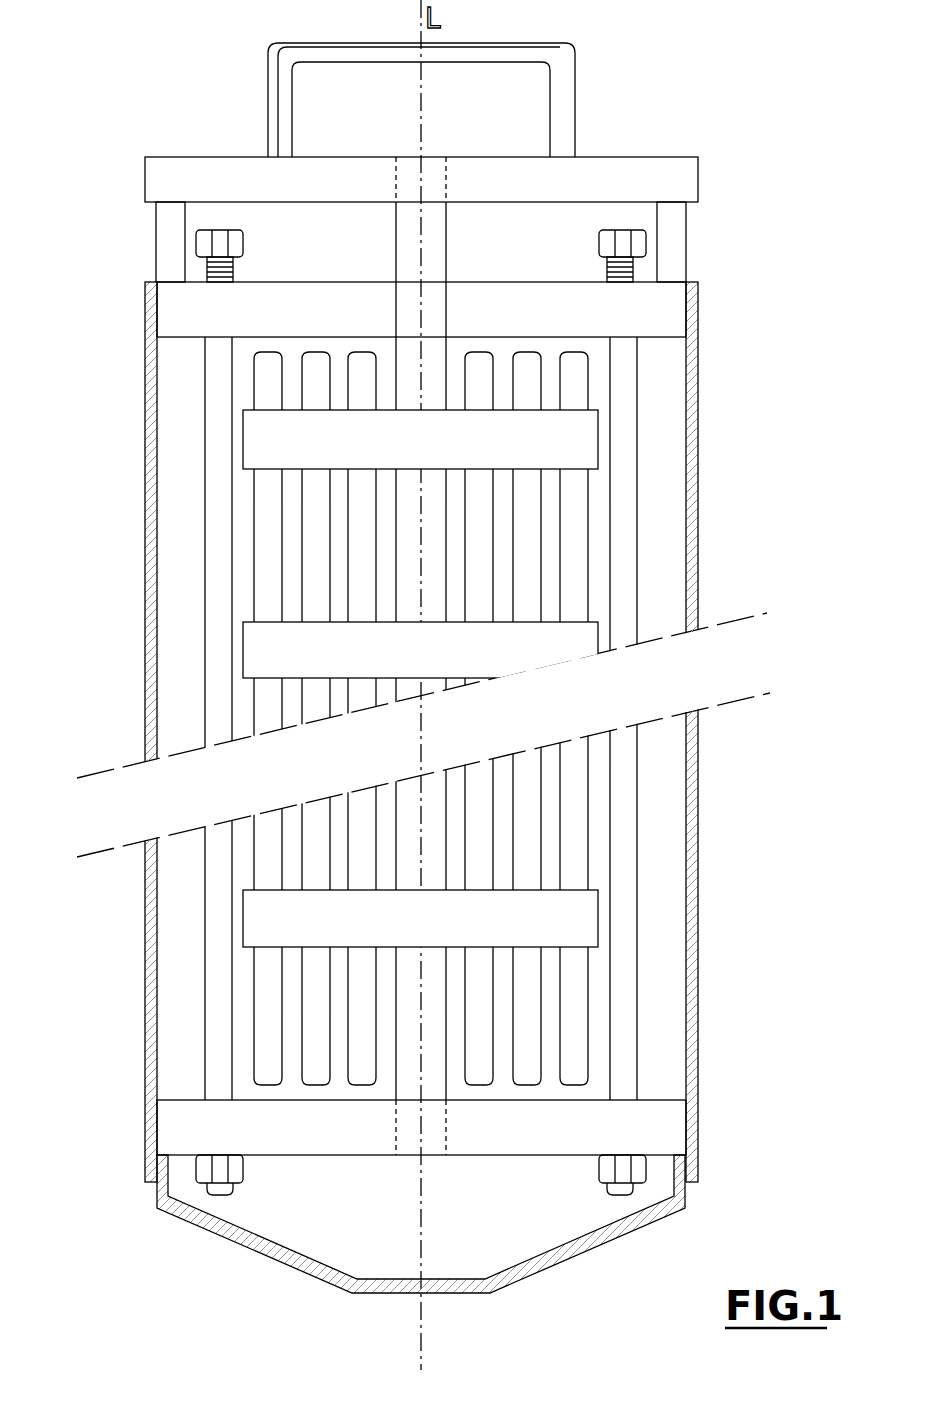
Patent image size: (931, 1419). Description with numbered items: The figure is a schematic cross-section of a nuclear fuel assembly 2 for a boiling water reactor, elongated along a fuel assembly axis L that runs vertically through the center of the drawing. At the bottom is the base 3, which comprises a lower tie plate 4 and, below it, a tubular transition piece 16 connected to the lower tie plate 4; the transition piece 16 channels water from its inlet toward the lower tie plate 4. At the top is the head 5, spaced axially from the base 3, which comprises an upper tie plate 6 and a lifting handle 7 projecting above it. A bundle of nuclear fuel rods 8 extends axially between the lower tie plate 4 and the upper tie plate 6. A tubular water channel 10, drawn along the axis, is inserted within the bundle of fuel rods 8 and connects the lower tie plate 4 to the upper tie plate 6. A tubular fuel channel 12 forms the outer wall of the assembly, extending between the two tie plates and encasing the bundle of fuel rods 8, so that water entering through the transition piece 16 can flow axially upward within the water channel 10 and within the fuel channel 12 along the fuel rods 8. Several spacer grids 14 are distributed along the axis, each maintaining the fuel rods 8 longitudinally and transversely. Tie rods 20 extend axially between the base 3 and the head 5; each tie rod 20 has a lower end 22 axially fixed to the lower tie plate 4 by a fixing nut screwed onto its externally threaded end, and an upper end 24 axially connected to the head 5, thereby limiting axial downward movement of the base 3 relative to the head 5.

The nuclear fuel assembly 2 is at (750, 73).
The base 3 is at (170, 1270).
The lower tie plate 4 is at (183, 1120).
The head 5 is at (113, 130).
The upper tie plate 6 is at (248, 337).
The lifting handle 7 is at (203, 150).
The nuclear fuel rods 8 is at (245, 530).
The tubular water channel 10 is at (462, 253).
The tubular fuel channel 12 is at (145, 988).
The spacer grids 14 is at (598, 438).
The tubular transition piece 16 is at (237, 1243).
The tie rod 20 is at (217, 452).
The lower end 22 is at (207, 1188).
The upper end 24 is at (205, 278).